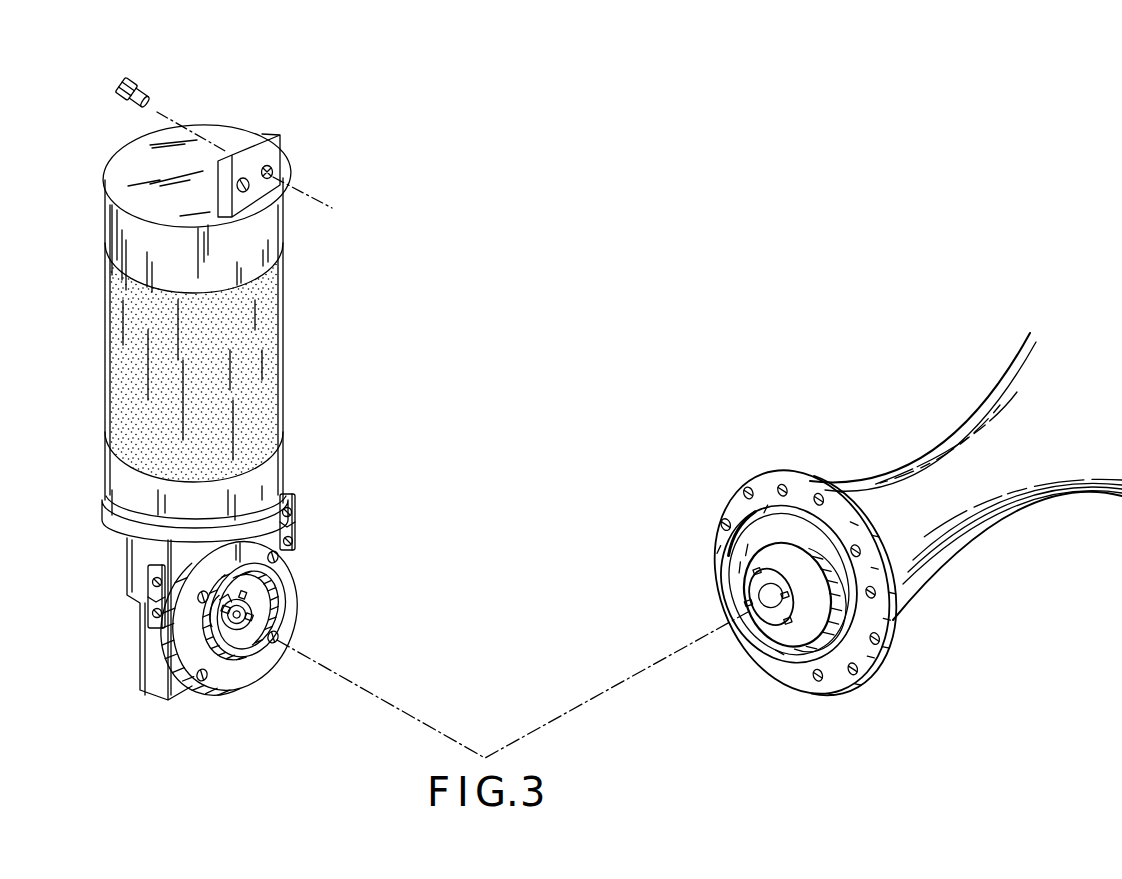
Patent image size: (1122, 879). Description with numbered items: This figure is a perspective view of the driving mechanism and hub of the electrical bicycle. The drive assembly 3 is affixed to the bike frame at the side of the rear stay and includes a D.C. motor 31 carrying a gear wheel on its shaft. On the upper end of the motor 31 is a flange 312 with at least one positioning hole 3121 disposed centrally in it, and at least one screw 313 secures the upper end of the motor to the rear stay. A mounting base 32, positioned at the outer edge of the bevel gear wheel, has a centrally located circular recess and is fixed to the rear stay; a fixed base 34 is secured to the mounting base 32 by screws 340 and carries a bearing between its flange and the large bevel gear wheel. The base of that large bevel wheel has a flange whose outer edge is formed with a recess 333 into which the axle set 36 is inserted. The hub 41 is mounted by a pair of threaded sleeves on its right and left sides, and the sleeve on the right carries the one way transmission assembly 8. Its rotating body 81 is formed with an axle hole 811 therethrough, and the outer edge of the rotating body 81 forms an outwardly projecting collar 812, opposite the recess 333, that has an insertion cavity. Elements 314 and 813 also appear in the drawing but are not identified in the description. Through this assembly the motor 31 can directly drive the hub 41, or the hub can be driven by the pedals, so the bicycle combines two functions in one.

The drive assembly 3 is at (317, 383).
The D.C. motor 31 is at (253, 350).
The flange 312 is at (270, 152).
The positioning hole 3121 is at (273, 171).
The screw 313 is at (143, 87).
The clip 314 is at (282, 528).
The mounting base 32 is at (145, 572).
The recess 333 is at (213, 610).
The fixed base 34 is at (290, 592).
The screws 340 is at (277, 558).
The axle set 36 is at (247, 617).
The hub 41 is at (903, 497).
The one way transmission assembly 8 is at (684, 553).
The rotating body 81 is at (812, 647).
The axle hole 811 is at (774, 588).
The collar 812 is at (787, 630).
The key 813 is at (790, 593).